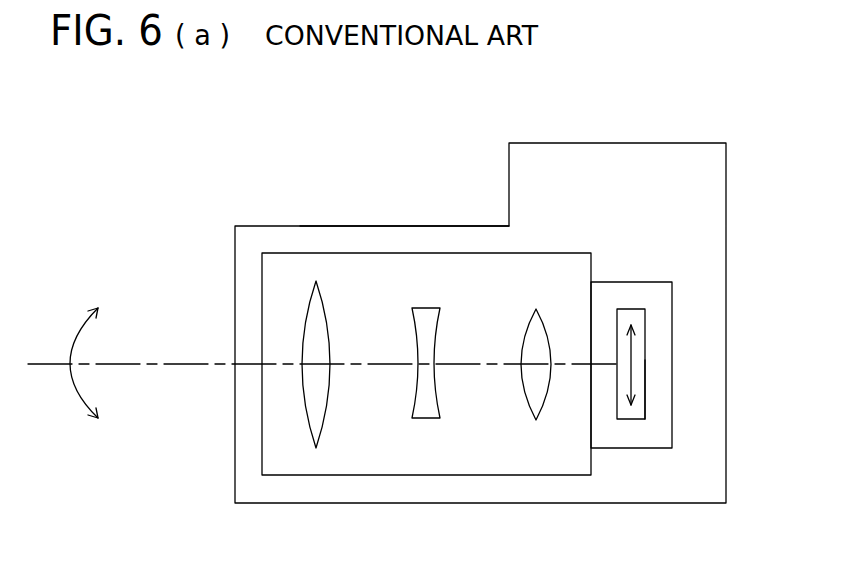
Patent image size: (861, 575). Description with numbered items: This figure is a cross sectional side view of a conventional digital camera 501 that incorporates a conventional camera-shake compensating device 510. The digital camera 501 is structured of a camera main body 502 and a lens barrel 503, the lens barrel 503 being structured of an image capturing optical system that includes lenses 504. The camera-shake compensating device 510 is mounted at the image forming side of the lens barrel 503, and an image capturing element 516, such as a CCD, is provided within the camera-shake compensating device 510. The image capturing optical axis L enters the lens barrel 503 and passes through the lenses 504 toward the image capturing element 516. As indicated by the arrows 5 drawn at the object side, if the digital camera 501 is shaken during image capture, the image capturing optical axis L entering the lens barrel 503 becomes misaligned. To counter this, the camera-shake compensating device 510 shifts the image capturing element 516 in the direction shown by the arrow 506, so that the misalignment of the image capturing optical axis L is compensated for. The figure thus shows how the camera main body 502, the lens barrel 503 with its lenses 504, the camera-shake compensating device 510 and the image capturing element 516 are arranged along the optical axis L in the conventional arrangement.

The arrows 5 is at (71, 340).
The optical axis L is at (168, 363).
The digital camera 501 is at (660, 131).
The camera main body 502 is at (427, 226).
The lens barrel 503 is at (297, 253).
The lenses 504 is at (536, 420).
The arrow 506 is at (645, 353).
The camera-shake compensating device 510 is at (631, 282).
The image capturing element 516 is at (645, 400).